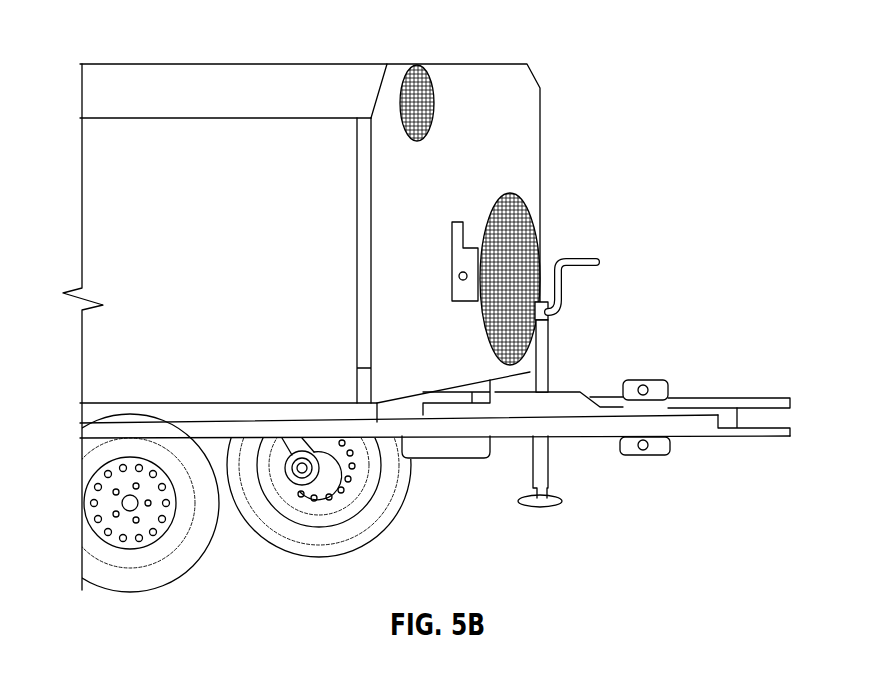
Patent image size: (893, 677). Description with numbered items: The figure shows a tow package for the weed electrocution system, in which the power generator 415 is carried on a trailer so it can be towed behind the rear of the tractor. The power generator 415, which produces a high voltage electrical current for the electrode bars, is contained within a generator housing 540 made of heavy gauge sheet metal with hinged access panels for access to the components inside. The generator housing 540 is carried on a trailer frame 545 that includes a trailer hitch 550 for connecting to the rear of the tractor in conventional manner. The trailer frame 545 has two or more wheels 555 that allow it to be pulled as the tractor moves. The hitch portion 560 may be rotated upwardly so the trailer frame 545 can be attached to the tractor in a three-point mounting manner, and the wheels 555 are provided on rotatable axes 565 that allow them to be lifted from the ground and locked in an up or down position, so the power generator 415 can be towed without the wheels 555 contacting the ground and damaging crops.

The power generator 415 is at (598, 40).
The generator housing 540 is at (532, 108).
The trailer frame 545 is at (263, 413).
The trailer hitch 550 is at (722, 398).
The wheels 555 is at (345, 554).
The hitch portion 560 is at (663, 338).
The rotatable axes 565 is at (280, 453).